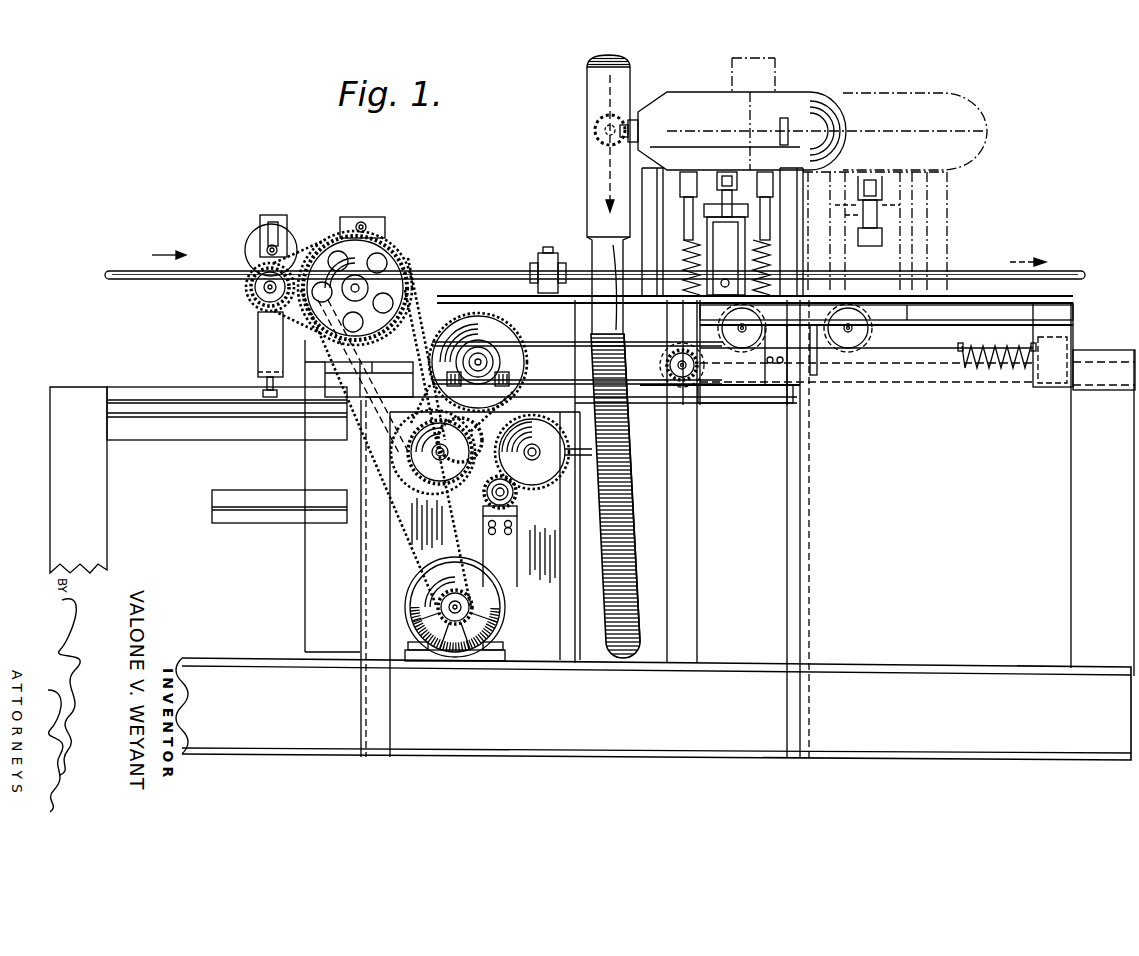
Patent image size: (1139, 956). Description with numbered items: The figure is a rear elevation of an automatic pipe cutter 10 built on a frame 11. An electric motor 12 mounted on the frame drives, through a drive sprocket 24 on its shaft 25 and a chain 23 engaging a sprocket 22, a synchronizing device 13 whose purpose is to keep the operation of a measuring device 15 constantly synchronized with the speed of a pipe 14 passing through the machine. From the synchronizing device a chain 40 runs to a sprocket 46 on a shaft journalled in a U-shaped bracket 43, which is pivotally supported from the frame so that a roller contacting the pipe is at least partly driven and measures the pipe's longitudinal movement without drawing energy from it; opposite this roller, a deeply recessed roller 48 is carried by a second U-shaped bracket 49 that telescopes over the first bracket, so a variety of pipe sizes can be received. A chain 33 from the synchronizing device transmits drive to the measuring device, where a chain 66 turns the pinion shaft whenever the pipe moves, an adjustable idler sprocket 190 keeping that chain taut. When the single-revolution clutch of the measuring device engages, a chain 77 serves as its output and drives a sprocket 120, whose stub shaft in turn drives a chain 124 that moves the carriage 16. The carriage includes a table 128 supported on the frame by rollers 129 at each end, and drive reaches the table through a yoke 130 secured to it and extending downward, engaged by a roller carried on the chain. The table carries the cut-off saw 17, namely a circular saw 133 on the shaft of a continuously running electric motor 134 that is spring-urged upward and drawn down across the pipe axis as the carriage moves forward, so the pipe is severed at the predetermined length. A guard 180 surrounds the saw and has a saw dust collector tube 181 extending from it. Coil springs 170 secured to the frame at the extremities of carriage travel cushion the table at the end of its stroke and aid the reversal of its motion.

The pipe cutter 10 is at (525, 248).
The frame 11 is at (305, 466).
The electric motor 12 is at (500, 596).
The synchronizing device 13 is at (366, 213).
The pipe 14 is at (465, 271).
The measuring device 15 is at (270, 212).
The carriage 16 is at (959, 195).
The cut-off saw 17 is at (806, 83).
The sprocket 22 is at (393, 267).
The chain 23 is at (403, 546).
The drive sprocket 24 is at (472, 580).
The shaft 25 is at (462, 605).
The chain 33 is at (418, 290).
The chain 40 is at (296, 318).
The U-shaped bracket 43 is at (287, 221).
The sprocket 46 is at (300, 262).
The deeply recessed roller 48 is at (247, 241).
The second U-shaped bracket 49 is at (258, 343).
The chain 66 is at (462, 490).
The chain 77 is at (553, 437).
The sprocket 120 is at (483, 332).
The chain 124 is at (650, 356).
The table 128 is at (760, 343).
The rollers 129 is at (870, 336).
The yoke 130 is at (615, 496).
The circular saw 133 is at (612, 82).
The electric motor 134 is at (700, 94).
The coil springs 170 is at (1000, 384).
The guard 180 is at (587, 168).
The saw dust collector tube 181 is at (626, 442).
The adjustable idler sprocket 190 is at (517, 493).